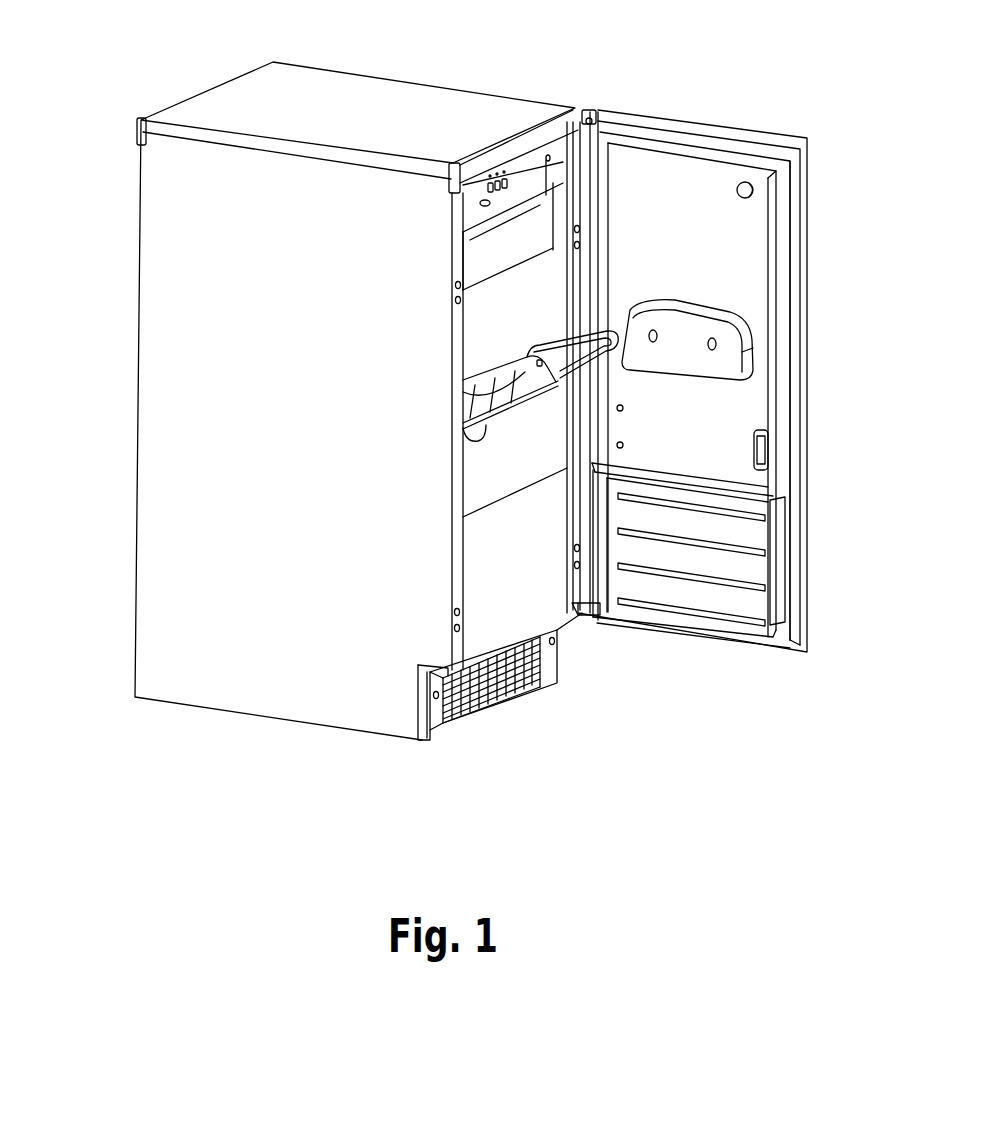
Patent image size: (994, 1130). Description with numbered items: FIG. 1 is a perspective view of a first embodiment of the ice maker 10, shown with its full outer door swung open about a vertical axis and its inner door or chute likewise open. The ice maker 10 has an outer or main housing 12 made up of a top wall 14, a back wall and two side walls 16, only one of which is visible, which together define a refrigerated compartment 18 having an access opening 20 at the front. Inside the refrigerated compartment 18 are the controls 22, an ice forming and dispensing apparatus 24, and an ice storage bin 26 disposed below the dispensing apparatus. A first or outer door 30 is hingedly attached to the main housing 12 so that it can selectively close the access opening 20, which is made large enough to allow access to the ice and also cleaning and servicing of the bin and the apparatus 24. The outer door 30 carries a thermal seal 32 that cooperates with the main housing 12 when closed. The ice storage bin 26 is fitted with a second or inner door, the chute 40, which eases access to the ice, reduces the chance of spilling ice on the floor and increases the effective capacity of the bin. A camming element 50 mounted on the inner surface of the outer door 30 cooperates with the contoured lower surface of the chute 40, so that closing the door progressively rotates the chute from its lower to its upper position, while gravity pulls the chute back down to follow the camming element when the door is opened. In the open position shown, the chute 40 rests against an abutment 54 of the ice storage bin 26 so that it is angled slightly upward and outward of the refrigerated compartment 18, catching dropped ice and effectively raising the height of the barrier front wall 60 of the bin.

The ice maker 10 is at (613, 73).
The main housing 12 is at (321, 398).
The top wall 14 is at (341, 124).
The side wall 16 is at (180, 232).
The refrigerated compartment 18 is at (461, 275).
The access opening 20 is at (513, 242).
The controls 22 is at (533, 168).
The ice forming and dispensing apparatus 24 is at (495, 240).
The ice storage bin 26 is at (478, 483).
The outer door 30 is at (730, 381).
The thermal seal 32 is at (795, 328).
The chute 40 is at (534, 397).
The camming element 50 is at (688, 338).
The abutment 54 is at (487, 440).
The barrier front wall 60 is at (506, 487).